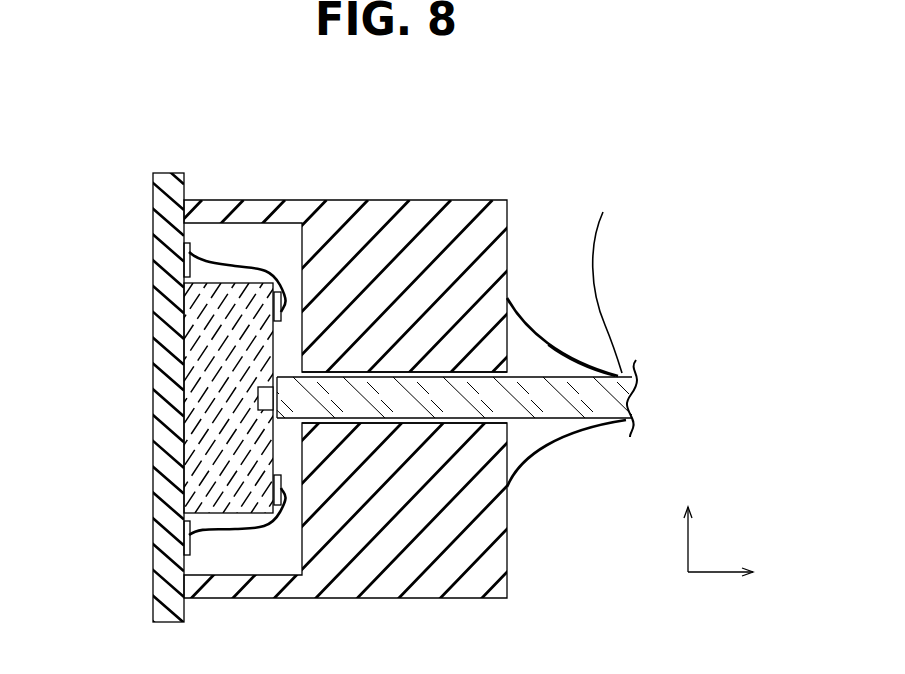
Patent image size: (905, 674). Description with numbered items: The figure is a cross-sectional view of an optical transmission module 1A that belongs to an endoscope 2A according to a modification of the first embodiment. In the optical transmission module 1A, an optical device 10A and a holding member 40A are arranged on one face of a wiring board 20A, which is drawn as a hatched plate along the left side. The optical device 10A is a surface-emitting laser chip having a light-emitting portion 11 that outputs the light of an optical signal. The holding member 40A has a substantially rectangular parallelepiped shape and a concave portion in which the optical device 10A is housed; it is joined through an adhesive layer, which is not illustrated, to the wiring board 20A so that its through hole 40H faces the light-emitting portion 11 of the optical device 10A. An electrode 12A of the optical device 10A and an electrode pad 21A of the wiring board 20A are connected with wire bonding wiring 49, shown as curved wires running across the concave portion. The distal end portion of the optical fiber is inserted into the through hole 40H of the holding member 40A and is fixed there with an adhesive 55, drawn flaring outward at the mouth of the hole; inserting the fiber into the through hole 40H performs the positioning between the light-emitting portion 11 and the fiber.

The optical transmission module 1A is at (737, 142).
The endoscope 2A is at (452, 381).
The wiring board 20A is at (168, 176).
The electrode pad 21A is at (191, 246).
The optical device 10A is at (229, 283).
The electrode 12A is at (280, 292).
The light-emitting portion 11 is at (258, 400).
The holding member 40A is at (424, 200).
The through hole 40H is at (528, 435).
The wire bonding wiring 49 is at (247, 532).
The adhesive 55 is at (540, 338).